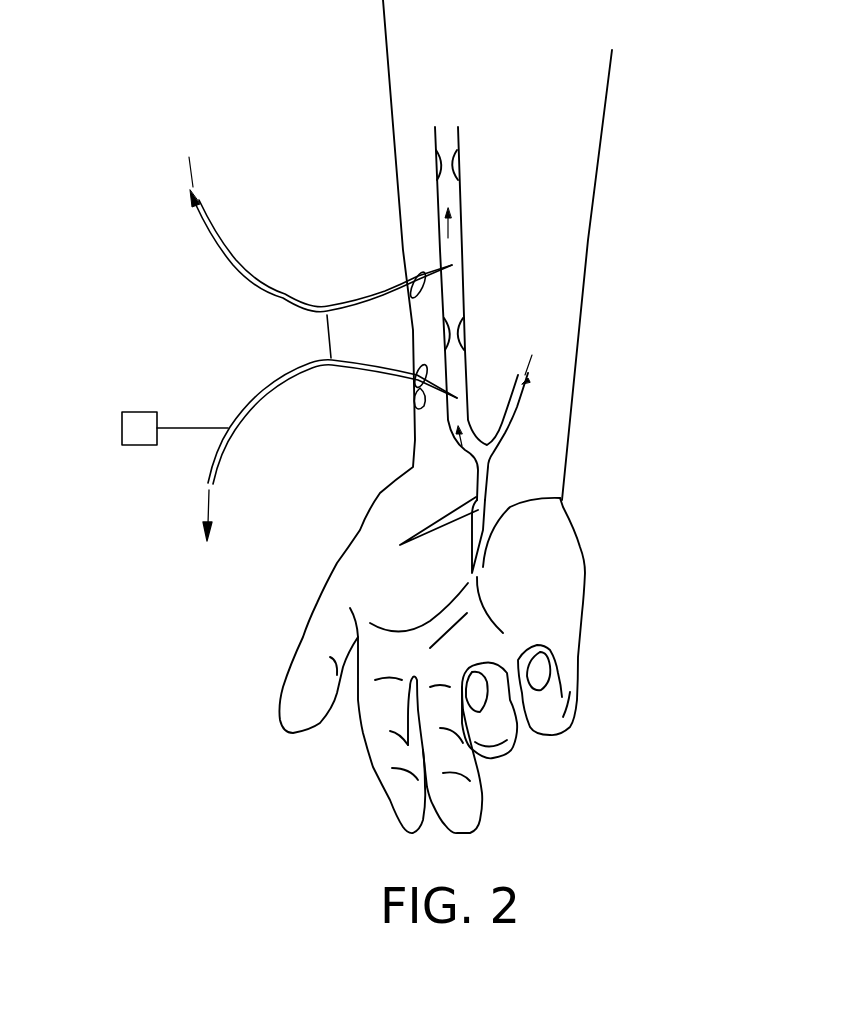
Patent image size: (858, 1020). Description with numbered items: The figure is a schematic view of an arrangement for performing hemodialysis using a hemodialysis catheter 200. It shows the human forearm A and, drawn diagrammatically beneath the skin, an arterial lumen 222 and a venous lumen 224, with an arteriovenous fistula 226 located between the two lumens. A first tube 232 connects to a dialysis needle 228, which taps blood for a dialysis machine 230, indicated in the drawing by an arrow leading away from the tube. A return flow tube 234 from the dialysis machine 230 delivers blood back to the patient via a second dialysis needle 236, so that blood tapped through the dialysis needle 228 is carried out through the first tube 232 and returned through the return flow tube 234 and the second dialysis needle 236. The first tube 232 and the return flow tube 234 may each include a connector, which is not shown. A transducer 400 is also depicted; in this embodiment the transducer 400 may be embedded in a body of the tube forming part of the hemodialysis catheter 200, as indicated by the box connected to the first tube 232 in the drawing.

The hemodialysis catheter 200 is at (712, 94).
The human forearm A is at (565, 158).
The arterial lumen 222 is at (518, 405).
The venous lumen 224 is at (445, 128).
The arteriovenous fistula 226 is at (470, 470).
The dialysis needle 228 is at (415, 406).
The dialysis machine 230 is at (232, 575).
The first tube 232 is at (222, 467).
The return flow tube 234 is at (270, 292).
The second dialysis needle 236 is at (416, 272).
The transducer 400 is at (138, 412).